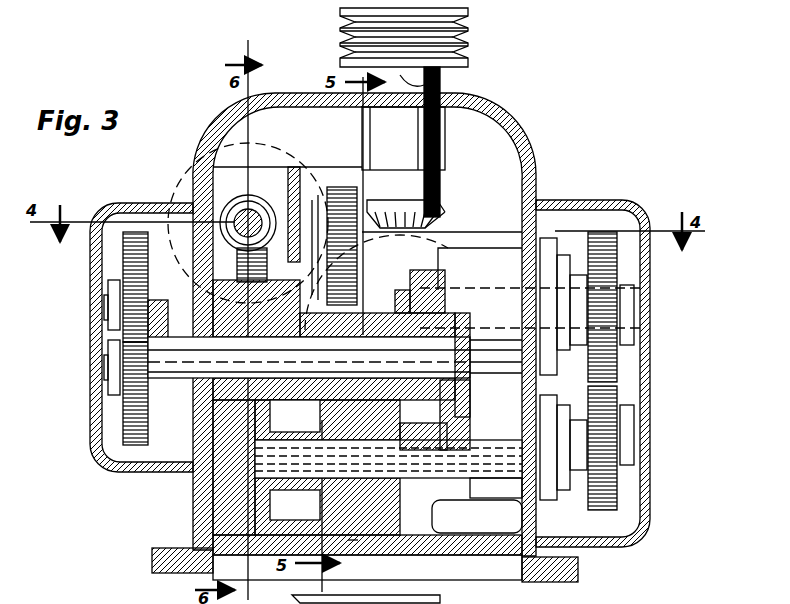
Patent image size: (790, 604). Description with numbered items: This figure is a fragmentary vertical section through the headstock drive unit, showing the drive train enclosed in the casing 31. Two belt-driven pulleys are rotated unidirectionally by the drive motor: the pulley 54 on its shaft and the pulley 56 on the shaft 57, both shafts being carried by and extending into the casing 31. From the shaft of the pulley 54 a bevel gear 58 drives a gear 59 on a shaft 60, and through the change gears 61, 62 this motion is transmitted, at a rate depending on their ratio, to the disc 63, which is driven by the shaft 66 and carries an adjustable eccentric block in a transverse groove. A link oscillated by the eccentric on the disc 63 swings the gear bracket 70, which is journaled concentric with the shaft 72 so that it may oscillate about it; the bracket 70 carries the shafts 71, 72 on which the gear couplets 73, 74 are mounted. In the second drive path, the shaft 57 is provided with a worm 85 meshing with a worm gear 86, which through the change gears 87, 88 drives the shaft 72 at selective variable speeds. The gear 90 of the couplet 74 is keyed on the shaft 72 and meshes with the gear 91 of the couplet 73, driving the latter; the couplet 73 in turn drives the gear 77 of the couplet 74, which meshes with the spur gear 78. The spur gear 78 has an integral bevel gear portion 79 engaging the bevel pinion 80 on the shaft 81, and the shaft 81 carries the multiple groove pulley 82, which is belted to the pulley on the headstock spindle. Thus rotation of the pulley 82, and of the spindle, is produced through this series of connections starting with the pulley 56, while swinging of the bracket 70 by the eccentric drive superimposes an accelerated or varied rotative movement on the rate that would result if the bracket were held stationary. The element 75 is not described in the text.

The casing 31 is at (536, 186).
The pulley 54 is at (428, 242).
The pulley 56 is at (185, 190).
The shaft 57 is at (240, 210).
The bevel gear 58 is at (428, 272).
The gear 59 is at (425, 284).
The shaft 60 is at (500, 294).
The change gear 61 is at (617, 272).
The change gear 62 is at (615, 400).
The disc 63 is at (438, 437).
The shaft 66 is at (505, 425).
The swinging gear bracket 70 is at (205, 518).
The shaft 71 is at (200, 488).
The shaft 72 is at (150, 355).
The gear couplet 73 is at (295, 505).
The gear couplet 74 is at (295, 416).
The drain 75 is at (350, 540).
The gear 77 is at (332, 378).
The spur gear 78 is at (340, 187).
The bevel gear portion 79 is at (395, 210).
The bevel pinion 80 is at (430, 212).
The shaft 81 is at (440, 82).
The multiple groove pulley 82 is at (468, 40).
The worm 85 is at (255, 208).
The worm gear 86 is at (260, 270).
The change gear 87 is at (123, 262).
The change gear 88 is at (123, 410).
The gear 90 is at (200, 445).
The gear 91 is at (255, 567).